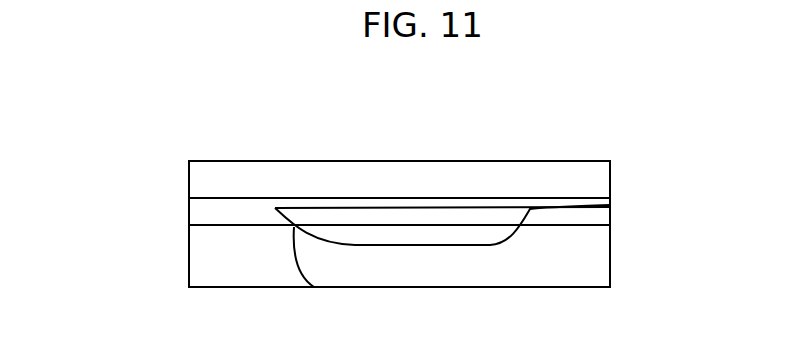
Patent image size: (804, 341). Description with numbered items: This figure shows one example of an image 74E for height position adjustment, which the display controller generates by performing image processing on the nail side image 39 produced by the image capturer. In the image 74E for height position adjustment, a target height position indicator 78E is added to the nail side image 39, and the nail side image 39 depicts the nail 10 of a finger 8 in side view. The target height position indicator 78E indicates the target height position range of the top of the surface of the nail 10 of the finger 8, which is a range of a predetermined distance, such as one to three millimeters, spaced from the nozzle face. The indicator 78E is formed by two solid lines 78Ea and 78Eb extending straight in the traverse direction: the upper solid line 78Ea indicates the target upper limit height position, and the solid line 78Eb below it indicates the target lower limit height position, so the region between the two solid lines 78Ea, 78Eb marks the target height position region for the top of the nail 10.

The image for height position adjustment 74E is at (558, 158).
The target height position indicator 78E is at (327, 189).
The solid line 78Ea is at (212, 198).
The solid line 78Eb is at (212, 224).
The nail 10 is at (407, 238).
The finger 8 is at (512, 263).
The nail side image 39 is at (573, 261).